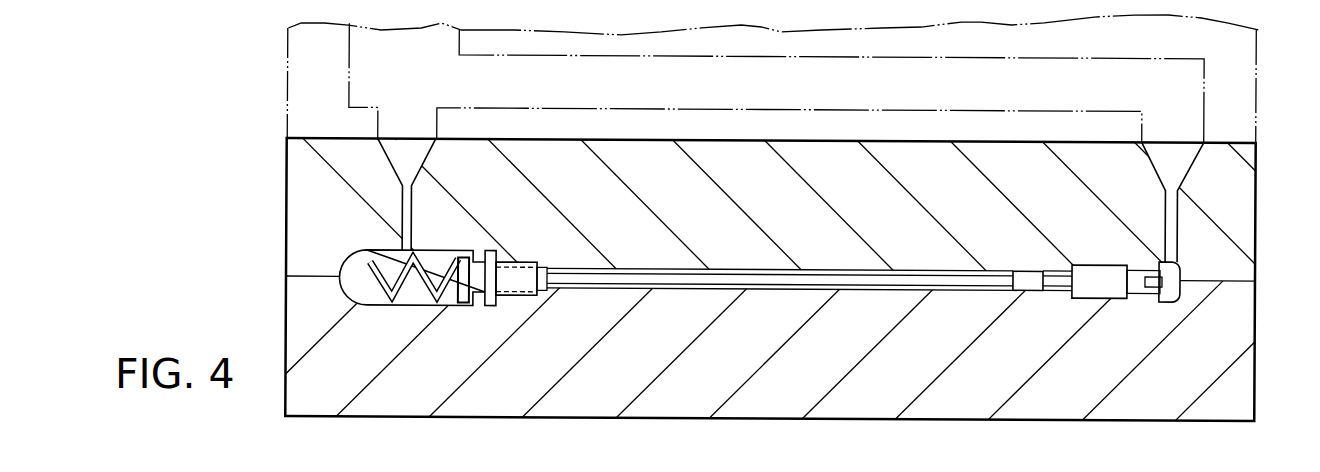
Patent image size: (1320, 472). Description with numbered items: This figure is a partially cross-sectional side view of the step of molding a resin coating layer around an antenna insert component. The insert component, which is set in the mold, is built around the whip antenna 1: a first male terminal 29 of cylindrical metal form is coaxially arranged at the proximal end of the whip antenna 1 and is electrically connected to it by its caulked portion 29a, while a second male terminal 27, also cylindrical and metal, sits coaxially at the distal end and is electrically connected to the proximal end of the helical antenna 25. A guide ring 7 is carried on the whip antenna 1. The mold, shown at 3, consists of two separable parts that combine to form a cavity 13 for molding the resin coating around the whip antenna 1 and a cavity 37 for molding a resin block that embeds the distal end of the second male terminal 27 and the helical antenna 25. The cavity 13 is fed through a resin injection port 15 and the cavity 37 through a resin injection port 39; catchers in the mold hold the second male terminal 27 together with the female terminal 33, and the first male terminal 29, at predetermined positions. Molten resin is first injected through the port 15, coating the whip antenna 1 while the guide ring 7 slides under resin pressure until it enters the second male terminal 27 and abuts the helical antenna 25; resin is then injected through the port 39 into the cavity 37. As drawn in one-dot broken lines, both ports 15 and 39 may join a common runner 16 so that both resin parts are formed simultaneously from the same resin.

The whip antenna 1 is at (775, 278).
The mold 3 is at (297, 300).
The guide ring 7 is at (1032, 276).
The cavity 13 is at (733, 265).
The resin injection port 15 is at (1173, 148).
The common runner 16 is at (367, 60).
The helical antenna 25 is at (428, 261).
The second male terminal 27 is at (477, 304).
The first male terminal 29 is at (1085, 283).
The caulked portion 29a is at (1143, 279).
The female terminal 33 is at (522, 266).
The cavity 37 is at (373, 293).
The resin injection port 39 is at (411, 151).